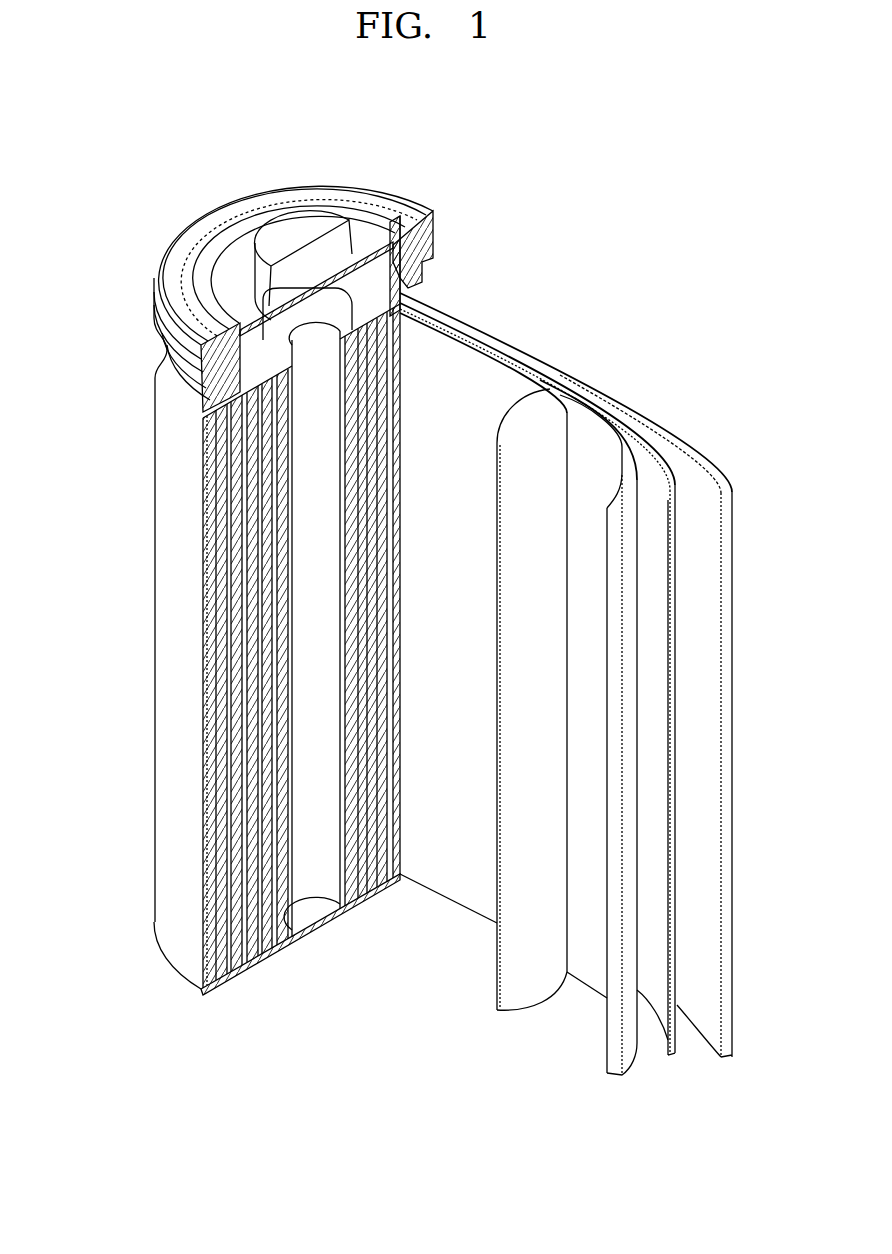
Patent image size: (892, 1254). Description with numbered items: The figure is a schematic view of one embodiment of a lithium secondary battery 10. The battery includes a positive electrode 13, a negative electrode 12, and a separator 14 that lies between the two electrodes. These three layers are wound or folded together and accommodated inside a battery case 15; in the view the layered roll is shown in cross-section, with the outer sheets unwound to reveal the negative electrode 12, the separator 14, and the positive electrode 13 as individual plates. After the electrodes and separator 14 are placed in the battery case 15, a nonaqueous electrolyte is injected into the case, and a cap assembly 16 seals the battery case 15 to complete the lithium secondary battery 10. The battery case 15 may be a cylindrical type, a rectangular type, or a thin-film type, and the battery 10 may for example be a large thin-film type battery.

The lithium secondary battery 10 is at (642, 119).
The negative electrode 12 is at (717, 470).
The positive electrode 13 is at (593, 418).
The separator 14 is at (504, 363).
The battery case 15 is at (167, 631).
The cap assembly 16 is at (288, 231).